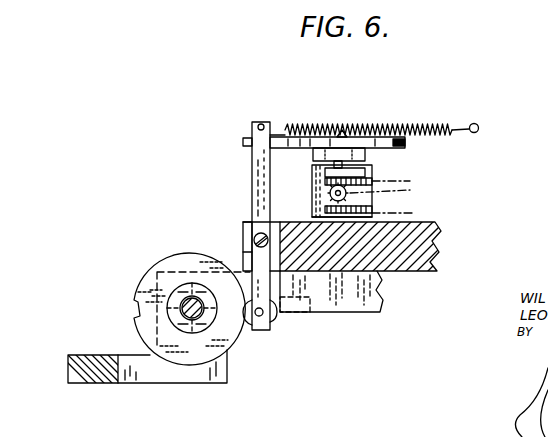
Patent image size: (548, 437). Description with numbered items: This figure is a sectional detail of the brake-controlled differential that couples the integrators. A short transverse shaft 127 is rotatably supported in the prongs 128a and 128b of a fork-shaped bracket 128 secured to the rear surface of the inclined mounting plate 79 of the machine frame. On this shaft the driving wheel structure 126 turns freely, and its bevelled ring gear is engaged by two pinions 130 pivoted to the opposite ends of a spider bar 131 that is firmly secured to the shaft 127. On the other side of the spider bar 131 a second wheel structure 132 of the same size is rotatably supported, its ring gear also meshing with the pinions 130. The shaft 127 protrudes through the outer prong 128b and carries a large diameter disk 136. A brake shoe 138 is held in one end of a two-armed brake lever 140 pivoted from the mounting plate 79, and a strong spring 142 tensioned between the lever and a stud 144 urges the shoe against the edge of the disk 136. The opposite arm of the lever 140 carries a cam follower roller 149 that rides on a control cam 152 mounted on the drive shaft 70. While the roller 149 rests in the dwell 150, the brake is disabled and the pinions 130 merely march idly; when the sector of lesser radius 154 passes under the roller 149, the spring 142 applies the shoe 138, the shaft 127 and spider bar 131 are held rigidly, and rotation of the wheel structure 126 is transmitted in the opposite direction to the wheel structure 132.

The drive shaft 70 is at (200, 318).
The inclined mounting plate 79 is at (440, 240).
The wheel structure 126 is at (378, 171).
The transverse shaft 127 is at (343, 162).
The fork-shaped bracket 128 is at (306, 184).
The prong 128a is at (370, 235).
The outer prong 128b is at (372, 164).
The pinions 130 is at (376, 189).
The spider bar 131 is at (380, 203).
The second wheel structure 132 is at (372, 214).
The disk 136 is at (405, 143).
The brake shoe 138 is at (277, 140).
The brake lever 140 is at (252, 158).
The spring 142 is at (411, 128).
The stud 144 is at (478, 125).
The cam follower roller 149 is at (246, 325).
The dwell 150 is at (164, 260).
The control cam 152 is at (128, 292).
The sector of lesser radius 154 is at (194, 366).